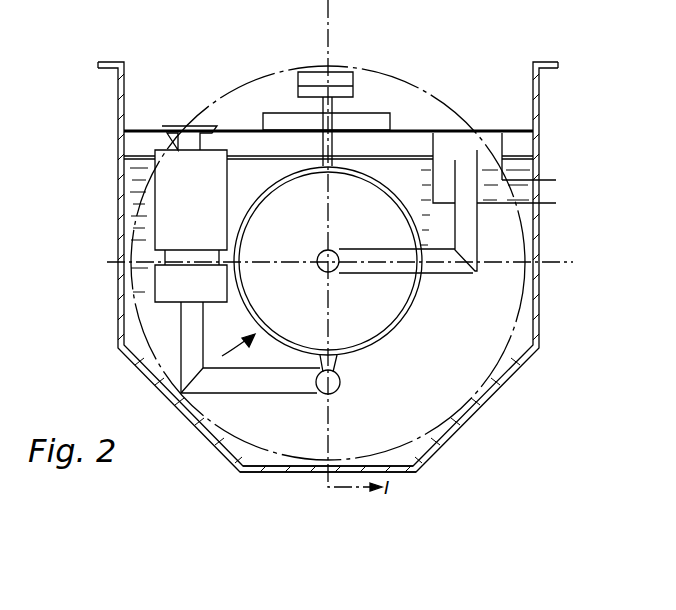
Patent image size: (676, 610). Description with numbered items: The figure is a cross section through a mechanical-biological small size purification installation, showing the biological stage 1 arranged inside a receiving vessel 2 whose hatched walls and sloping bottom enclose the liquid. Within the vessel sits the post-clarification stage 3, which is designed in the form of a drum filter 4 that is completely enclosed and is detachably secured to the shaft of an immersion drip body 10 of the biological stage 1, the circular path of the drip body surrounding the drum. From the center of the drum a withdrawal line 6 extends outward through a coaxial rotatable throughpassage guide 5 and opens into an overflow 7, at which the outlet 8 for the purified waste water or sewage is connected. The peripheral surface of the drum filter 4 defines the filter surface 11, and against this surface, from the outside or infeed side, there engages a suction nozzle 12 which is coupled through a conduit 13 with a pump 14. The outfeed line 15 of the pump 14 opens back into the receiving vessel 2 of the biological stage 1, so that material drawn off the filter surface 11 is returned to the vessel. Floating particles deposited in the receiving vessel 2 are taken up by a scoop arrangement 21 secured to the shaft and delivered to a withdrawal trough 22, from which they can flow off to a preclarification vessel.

The biological stage 1 is at (440, 364).
The receiving vessel 2 is at (420, 455).
The post-clarification stage 3 is at (232, 349).
The drum filter 4 is at (395, 294).
The rotatable throughpassage guide 5 is at (319, 254).
The withdrawal line 6 is at (448, 275).
The overflow 7 is at (458, 158).
The outlet 8 is at (548, 181).
The immersion drip body 10 is at (445, 93).
The filter surface 11 is at (393, 331).
The suction nozzle 12 is at (340, 379).
The conduit 13 is at (249, 386).
The pump 14 is at (168, 215).
The outfeed line 15 is at (152, 283).
The scoop arrangement 21 is at (337, 71).
The withdrawal trough 22 is at (365, 113).